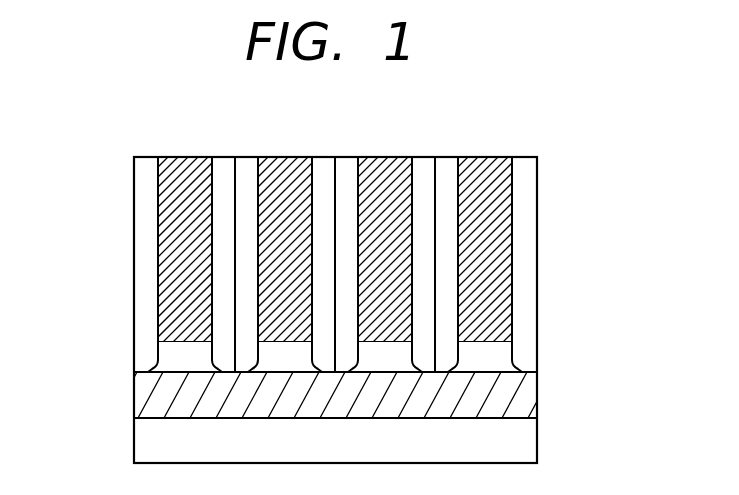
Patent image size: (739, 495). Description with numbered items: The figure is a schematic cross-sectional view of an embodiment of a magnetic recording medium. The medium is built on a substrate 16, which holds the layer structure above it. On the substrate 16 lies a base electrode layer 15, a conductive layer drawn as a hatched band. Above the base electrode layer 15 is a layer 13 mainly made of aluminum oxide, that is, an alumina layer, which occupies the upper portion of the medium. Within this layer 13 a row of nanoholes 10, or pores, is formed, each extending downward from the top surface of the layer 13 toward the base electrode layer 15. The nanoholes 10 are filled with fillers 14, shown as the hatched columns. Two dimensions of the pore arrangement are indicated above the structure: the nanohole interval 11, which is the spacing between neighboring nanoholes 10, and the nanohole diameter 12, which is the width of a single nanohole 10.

The nanohole 10 is at (487, 143).
The nanohole interval 11 is at (279, 129).
The nanohole diameter 12 is at (405, 129).
The layer mainly made of aluminum oxide 13 is at (563, 155).
The fillers 14 is at (170, 202).
The base electrode layer 15 is at (563, 367).
The substrate 16 is at (536, 432).